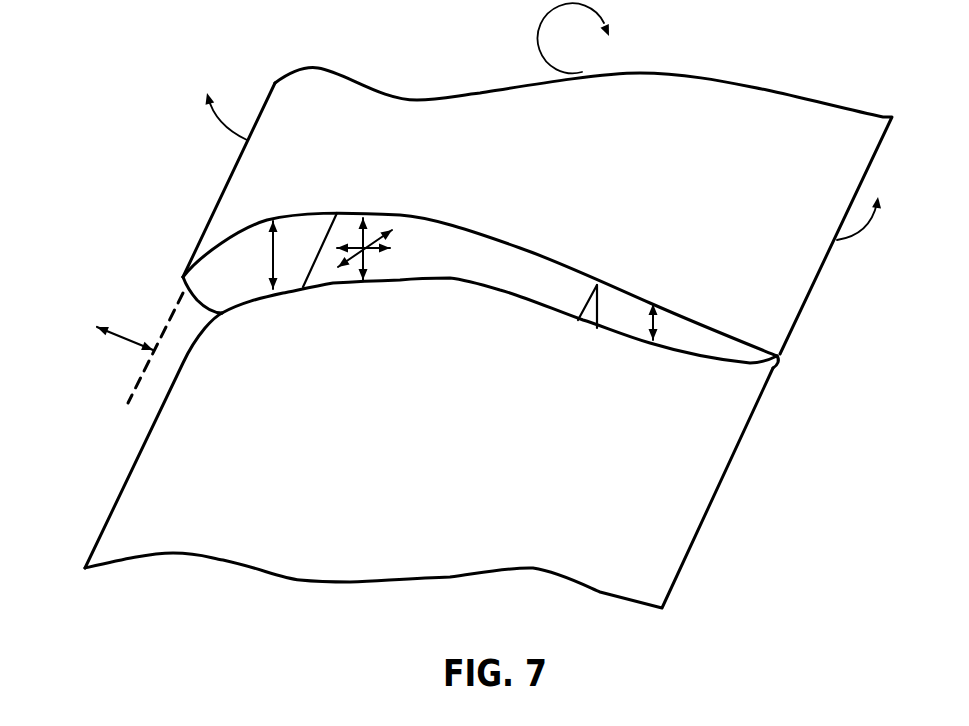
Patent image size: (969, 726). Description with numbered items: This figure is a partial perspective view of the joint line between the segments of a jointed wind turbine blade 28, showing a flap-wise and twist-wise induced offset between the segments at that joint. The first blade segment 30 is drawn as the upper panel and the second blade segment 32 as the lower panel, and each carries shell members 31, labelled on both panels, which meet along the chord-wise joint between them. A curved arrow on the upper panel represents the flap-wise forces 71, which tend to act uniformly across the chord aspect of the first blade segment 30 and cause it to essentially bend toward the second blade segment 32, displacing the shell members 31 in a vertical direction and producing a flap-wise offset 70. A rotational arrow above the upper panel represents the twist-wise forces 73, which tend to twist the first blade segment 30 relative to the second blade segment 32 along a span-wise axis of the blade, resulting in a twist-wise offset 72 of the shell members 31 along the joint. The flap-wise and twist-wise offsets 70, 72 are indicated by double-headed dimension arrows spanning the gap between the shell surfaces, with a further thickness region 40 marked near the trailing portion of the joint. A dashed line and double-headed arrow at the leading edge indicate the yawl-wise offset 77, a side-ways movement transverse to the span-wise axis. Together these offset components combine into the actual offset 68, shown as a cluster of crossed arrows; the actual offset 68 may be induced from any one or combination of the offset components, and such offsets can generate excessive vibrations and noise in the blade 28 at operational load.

The blade 28 is at (122, 171).
The first blade segment 30 is at (795, 317).
The shell members 31 is at (528, 168).
The second blade segment 32 is at (130, 473).
The airfoil wall thickness region 40 is at (597, 303).
The actual offset 68 is at (367, 252).
The flap-wise offset 70 is at (277, 251).
The twist-wise offset 72 is at (663, 315).
The flap-wise forces 71 is at (247, 140).
The twist-wise forces 73 is at (548, 23).
The yawl-wise offset 77 is at (125, 338).